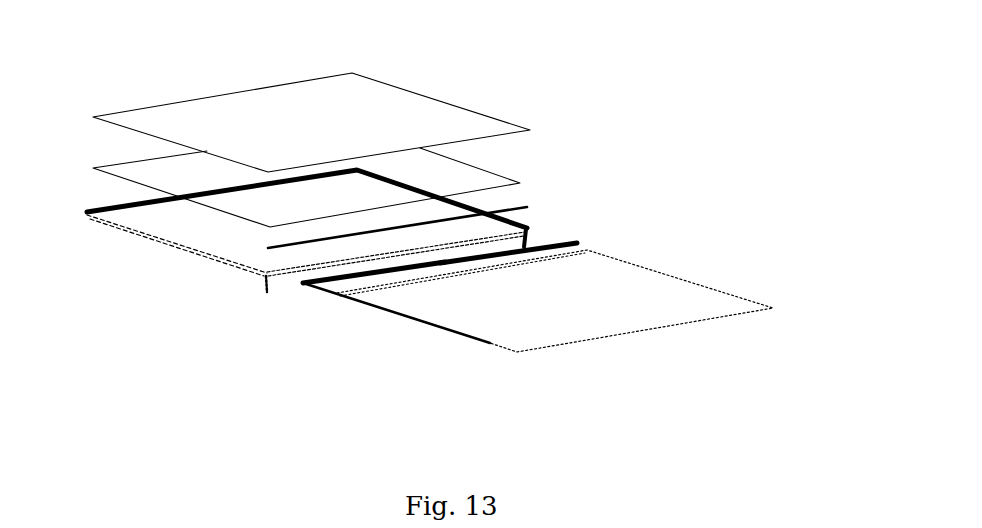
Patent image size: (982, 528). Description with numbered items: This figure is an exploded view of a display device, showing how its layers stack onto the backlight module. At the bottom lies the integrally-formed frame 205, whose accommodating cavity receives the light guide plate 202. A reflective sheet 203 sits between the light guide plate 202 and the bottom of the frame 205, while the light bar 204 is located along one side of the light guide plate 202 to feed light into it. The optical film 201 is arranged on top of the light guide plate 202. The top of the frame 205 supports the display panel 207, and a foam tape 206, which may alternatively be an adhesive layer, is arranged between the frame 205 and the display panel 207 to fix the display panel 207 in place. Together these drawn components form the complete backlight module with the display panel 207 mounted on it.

The optical film 201 is at (677, 287).
The light guide plate 202 is at (577, 243).
The reflective sheet 203 is at (303, 283).
The light bar 204 is at (527, 207).
The integrally-formed frame 205 is at (208, 250).
The foam tape 206 is at (520, 183).
The display panel 207 is at (362, 87).